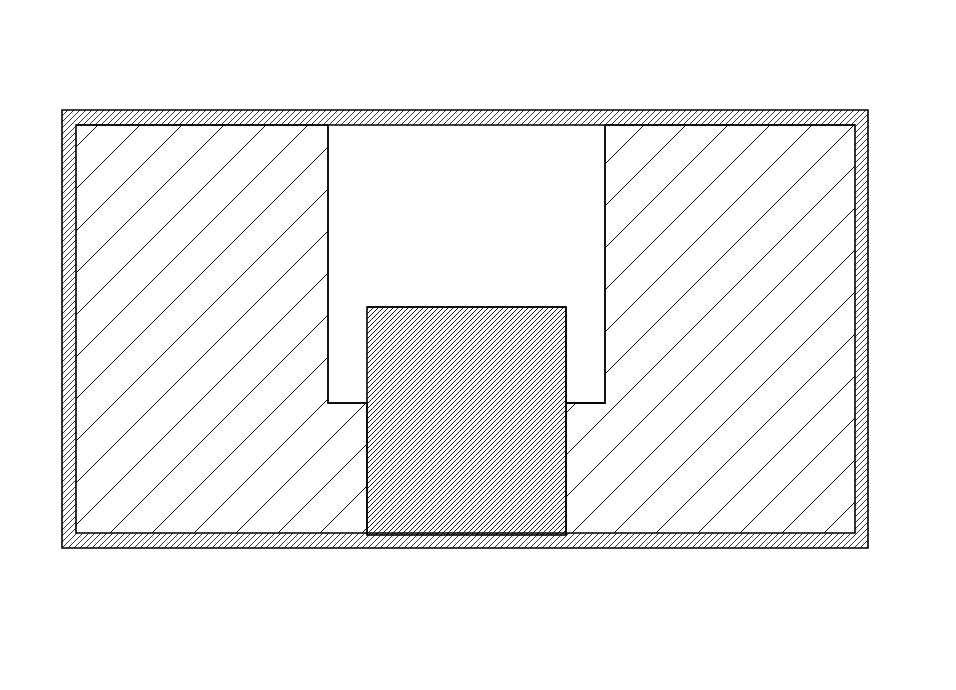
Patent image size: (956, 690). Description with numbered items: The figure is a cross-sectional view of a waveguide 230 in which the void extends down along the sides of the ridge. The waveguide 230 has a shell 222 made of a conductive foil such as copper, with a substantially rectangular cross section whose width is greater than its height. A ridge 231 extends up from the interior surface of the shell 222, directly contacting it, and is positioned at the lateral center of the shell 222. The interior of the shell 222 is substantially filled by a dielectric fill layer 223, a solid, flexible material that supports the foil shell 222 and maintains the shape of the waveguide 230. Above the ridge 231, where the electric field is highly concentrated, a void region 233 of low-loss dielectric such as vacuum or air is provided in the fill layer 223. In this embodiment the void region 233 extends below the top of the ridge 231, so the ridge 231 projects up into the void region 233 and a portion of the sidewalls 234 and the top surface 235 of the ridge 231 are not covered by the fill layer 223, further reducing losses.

The waveguide 230 is at (112, 49).
The shell 222 is at (697, 120).
The dielectric fill layer 223 is at (756, 365).
The void region 233 is at (446, 136).
The sidewalls 234 is at (572, 319).
The top surface 235 is at (467, 292).
The ridge 231 is at (530, 500).